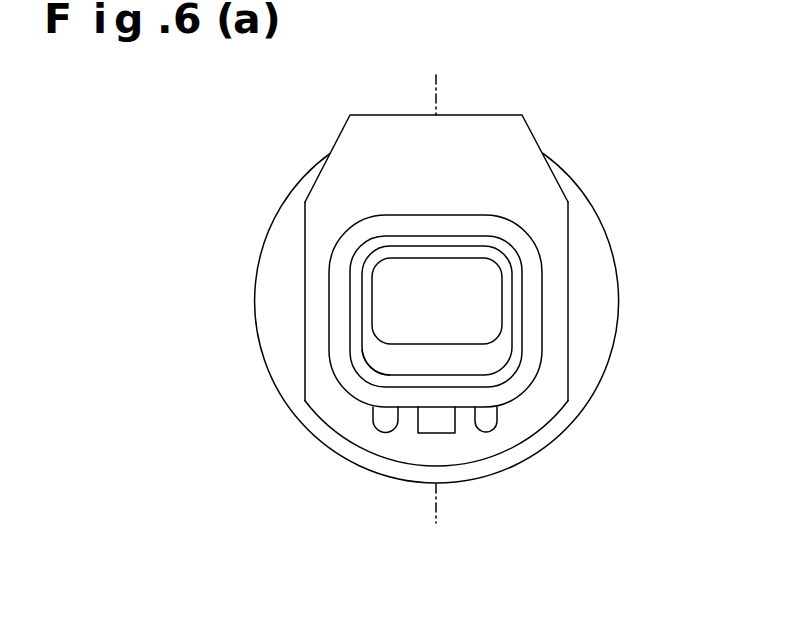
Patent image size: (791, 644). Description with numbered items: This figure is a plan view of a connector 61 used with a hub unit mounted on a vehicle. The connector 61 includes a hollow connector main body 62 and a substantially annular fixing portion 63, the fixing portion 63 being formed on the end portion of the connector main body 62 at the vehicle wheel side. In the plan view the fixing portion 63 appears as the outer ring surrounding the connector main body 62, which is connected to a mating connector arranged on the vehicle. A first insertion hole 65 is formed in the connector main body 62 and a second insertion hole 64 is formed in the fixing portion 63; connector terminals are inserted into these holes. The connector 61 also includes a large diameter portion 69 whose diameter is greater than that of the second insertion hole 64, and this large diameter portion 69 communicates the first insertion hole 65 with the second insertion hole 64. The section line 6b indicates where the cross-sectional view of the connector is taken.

The connector 61 is at (600, 481).
The connector main body 62 is at (470, 215).
The fixing portion 63 is at (493, 475).
The second insertion hole 64 is at (503, 293).
The first insertion hole 65 is at (416, 237).
The large diameter portion 69 is at (382, 367).
The line 6b- 6b is at (424, 79).